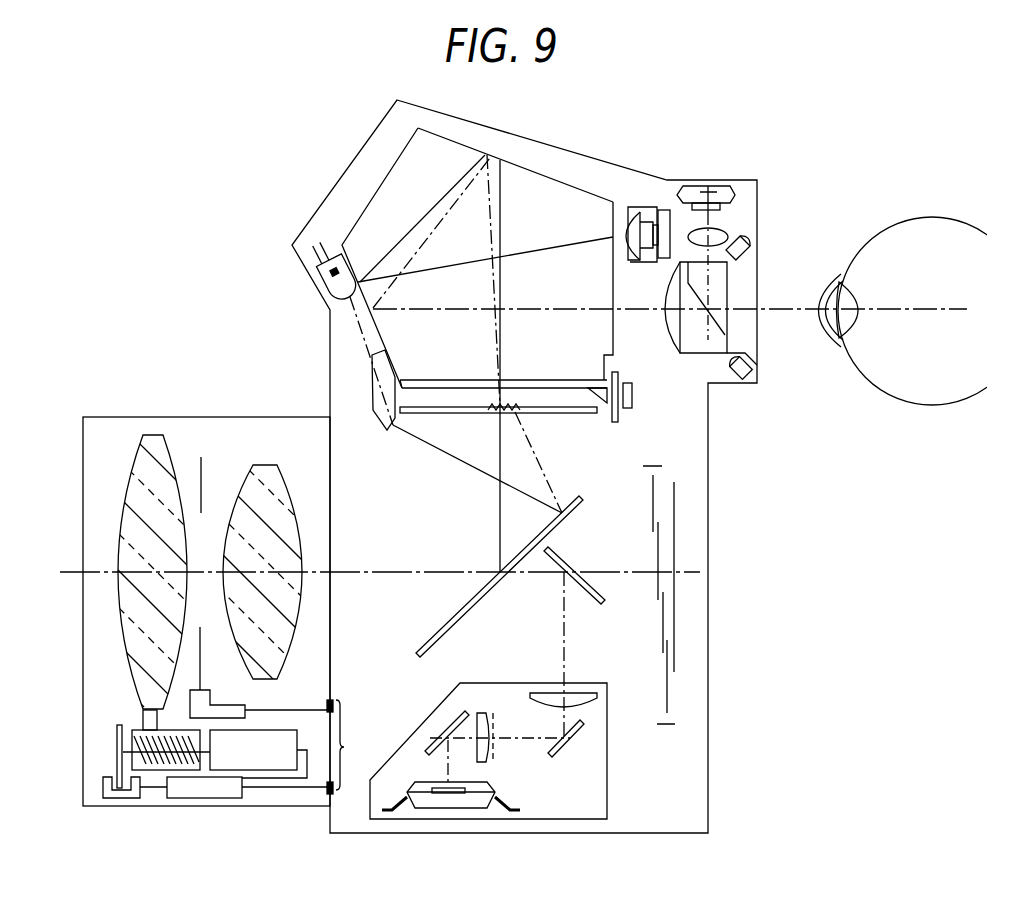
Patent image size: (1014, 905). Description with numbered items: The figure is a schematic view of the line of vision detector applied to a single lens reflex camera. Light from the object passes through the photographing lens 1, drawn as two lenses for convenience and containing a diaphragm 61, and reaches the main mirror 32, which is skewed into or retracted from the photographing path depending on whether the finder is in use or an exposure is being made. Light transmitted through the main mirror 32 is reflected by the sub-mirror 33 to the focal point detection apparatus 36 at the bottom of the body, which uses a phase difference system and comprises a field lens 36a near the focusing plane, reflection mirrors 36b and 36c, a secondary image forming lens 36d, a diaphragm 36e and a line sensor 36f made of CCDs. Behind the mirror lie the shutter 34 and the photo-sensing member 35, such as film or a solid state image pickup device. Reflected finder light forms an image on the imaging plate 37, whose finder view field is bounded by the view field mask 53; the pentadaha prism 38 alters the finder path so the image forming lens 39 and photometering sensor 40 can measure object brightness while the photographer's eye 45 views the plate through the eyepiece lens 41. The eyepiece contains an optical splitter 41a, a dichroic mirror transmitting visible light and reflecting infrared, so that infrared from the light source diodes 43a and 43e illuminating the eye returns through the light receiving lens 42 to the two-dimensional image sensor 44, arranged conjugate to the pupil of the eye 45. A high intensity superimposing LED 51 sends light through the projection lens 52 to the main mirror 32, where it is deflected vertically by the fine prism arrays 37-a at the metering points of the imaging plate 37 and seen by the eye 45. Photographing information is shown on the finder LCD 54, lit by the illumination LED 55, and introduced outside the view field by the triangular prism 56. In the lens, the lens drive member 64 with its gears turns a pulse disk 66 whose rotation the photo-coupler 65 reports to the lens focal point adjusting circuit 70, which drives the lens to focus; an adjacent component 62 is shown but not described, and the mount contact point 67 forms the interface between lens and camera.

The photographing lens 1 is at (255, 462).
The main mirror 32 is at (470, 604).
The sub-mirror 33 is at (603, 603).
The shutter 34 is at (655, 505).
The photo-sensing member 35 is at (675, 626).
The focal point detection apparatus 36 is at (608, 792).
The field lens 36a is at (608, 697).
The reflection mirror 36b is at (567, 748).
The reflection mirror 36c is at (415, 732).
The secondary image forming lens 36d is at (478, 713).
The diaphragm 36e is at (497, 712).
The line sensor 36f is at (467, 788).
The imaging plate 37 is at (550, 430).
The fine prism array 37-a is at (517, 410).
The pentadaha prism 38 is at (366, 204).
The image forming lens 39 is at (632, 207).
The photometering sensor 40 is at (665, 208).
The eyepiece lens 41 is at (663, 325).
The optical splitter 41a is at (707, 333).
The light receiving lens 42 is at (730, 232).
The light receiving element 43a is at (757, 384).
The light source 43e is at (748, 258).
The image sensor 44 is at (732, 187).
The eye 45 is at (948, 232).
The superimposing LED 51 is at (322, 285).
The projection lens 52 is at (372, 378).
The view field mask 53 is at (428, 388).
The LCD in the finder 54 is at (620, 424).
The illumination LED 55 is at (633, 400).
The triangular prism 56 is at (603, 405).
The diaphragm 61 is at (207, 573).
The encoder 62 is at (247, 697).
The lens drive member 64 is at (137, 740).
The photo-coupler 65 is at (133, 800).
The pulse disk 66 is at (117, 757).
The mount contact point 67 is at (348, 747).
The lens focal point adjusting circuit 70 is at (210, 798).